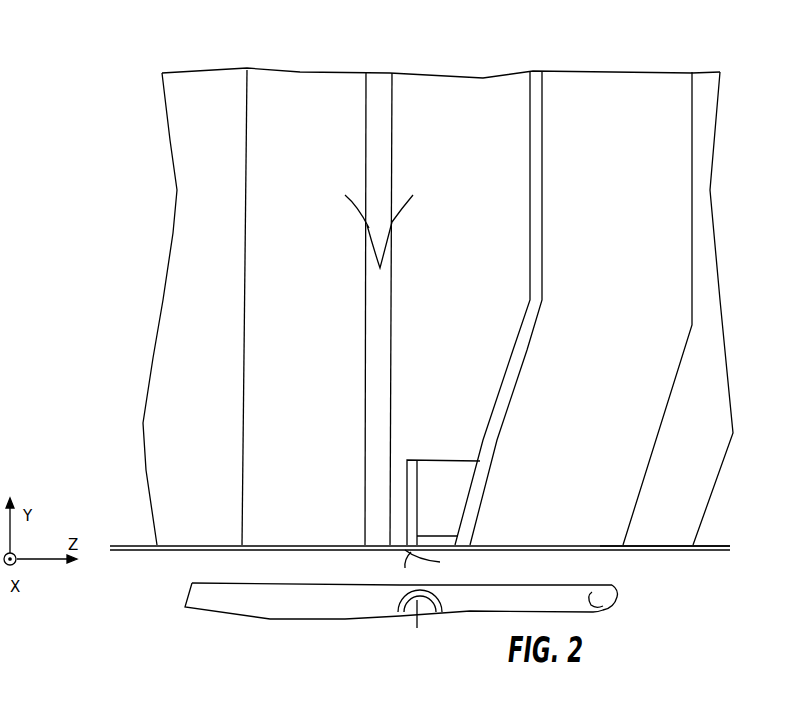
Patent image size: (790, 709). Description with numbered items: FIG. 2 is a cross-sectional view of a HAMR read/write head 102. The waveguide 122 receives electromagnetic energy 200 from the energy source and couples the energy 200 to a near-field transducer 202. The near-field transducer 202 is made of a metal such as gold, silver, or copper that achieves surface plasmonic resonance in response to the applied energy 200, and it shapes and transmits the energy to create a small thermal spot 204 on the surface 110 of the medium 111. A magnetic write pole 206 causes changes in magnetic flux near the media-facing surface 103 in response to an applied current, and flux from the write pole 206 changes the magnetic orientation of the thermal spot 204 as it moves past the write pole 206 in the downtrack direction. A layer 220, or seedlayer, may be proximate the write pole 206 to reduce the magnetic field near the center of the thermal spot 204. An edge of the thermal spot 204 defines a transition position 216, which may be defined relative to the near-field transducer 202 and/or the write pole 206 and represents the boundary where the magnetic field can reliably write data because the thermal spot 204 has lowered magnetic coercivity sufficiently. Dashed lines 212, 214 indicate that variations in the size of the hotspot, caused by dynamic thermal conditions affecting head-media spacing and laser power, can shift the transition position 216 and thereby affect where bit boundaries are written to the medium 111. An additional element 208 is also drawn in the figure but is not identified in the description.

The assembly 102 is at (149, 48).
The panel 122 is at (520, 42).
The side panel 206 is at (624, 72).
The slot 200 is at (365, 220).
The flange 220 is at (508, 400).
The bracket 208 is at (440, 460).
The fastener 202 is at (403, 560).
The base 216 is at (438, 565).
The floor 110 is at (567, 602).
The surface 103 is at (653, 557).
The ball 212 is at (397, 597).
The socket 204 is at (410, 628).
The rod 214 is at (450, 600).
The rail 111 is at (599, 598).